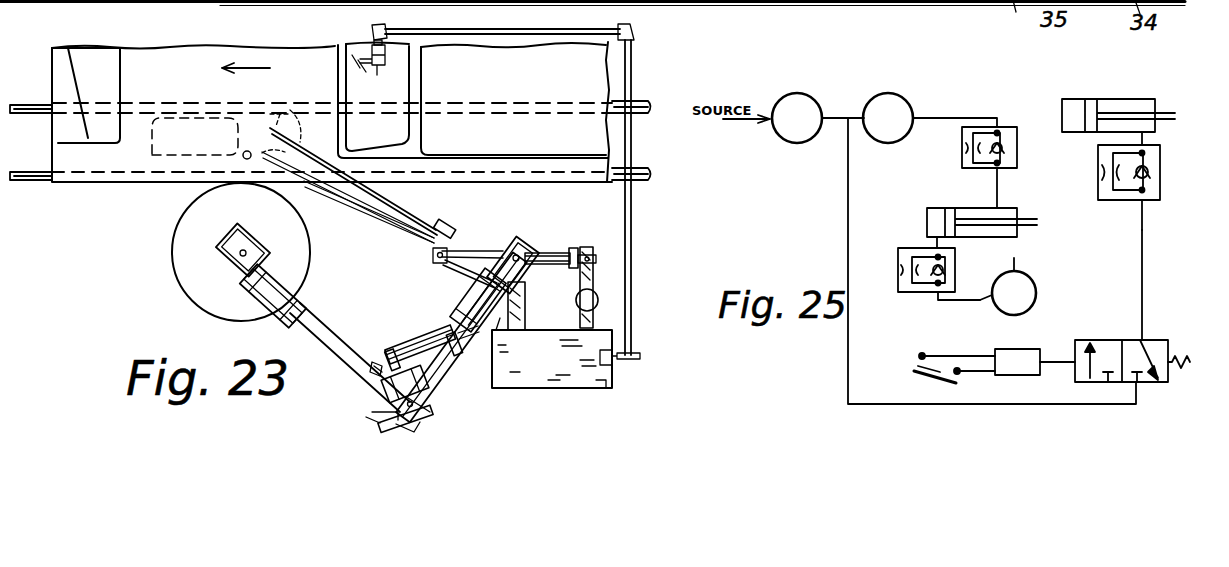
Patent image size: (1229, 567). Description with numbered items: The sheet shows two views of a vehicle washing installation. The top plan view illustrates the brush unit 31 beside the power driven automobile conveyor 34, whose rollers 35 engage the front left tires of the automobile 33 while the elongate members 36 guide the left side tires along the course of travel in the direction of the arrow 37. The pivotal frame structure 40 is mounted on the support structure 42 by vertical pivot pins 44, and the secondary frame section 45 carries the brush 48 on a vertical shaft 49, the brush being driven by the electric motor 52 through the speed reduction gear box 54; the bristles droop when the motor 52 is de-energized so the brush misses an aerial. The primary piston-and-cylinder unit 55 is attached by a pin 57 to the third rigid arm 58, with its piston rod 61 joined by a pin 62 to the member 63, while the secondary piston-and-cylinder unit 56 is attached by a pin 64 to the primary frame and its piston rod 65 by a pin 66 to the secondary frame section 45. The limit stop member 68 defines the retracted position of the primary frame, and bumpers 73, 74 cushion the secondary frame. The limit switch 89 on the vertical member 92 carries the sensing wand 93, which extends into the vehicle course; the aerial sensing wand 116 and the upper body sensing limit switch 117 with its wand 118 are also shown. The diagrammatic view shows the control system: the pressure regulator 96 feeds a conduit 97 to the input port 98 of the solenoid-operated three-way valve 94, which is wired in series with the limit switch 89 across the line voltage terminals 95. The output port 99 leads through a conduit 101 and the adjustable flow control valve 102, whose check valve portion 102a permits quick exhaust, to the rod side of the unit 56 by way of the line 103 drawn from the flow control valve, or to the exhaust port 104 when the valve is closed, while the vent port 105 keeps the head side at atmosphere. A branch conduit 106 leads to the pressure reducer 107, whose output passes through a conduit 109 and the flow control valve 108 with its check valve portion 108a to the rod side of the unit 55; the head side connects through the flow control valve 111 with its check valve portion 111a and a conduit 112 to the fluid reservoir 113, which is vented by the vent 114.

In FIG. 23, the brush unit 31 is at (157, 313).
In FIG. 23, the automobile 33 is at (332, 112).
In FIG. 23, the automobile conveyor 34 is at (640, 113).
In FIG. 23, the rollers 35 is at (298, 110).
In FIG. 23, the elongate members 36 is at (32, 104).
In FIG. 23, the arrow 37 is at (248, 60).
In FIG. 23, the pivotal frame structure 40 is at (460, 383).
In FIG. 23, the support structure 42 is at (552, 359).
In FIG. 23, the vertical pivot pins 44 is at (510, 250).
In FIG. 23, the secondary frame section 45 is at (332, 342).
In FIG. 23, the brush 48 is at (192, 252).
In FIG. 23, the vertical shaft 49 is at (238, 260).
In FIG. 23, the electric motor 52 is at (282, 312).
In FIG. 23, the speed reduction gear box 54 is at (236, 242).
In FIG. 23, the primary piston-and-cylinder unit 55 is at (560, 250).
In FIG. 25, the primary piston-and-cylinder unit 55 is at (980, 208).
In FIG. 23, the secondary piston-and-cylinder unit 56 is at (414, 342).
In FIG. 25, the secondary piston-and-cylinder unit 56 is at (1126, 100).
In FIG. 23, the pin 57 is at (588, 258).
In FIG. 23, the third rigid arm 58 is at (580, 283).
In FIG. 23, the piston rod 61 is at (482, 250).
In FIG. 23, the pin 62 is at (432, 256).
In FIG. 23, the member 63 is at (456, 272).
In FIG. 23, the pin 64 is at (464, 318).
In FIG. 23, the piston rod 65 is at (386, 352).
In FIG. 23, the pin 66 is at (376, 368).
In FIG. 23, the limit stop member 68 is at (508, 305).
In FIG. 23, the bumper 73 is at (396, 388).
In FIG. 23, the bumper 74 is at (368, 417).
In FIG. 25, the limit switch 89 is at (932, 380).
In FIG. 23, the vertical member 92 is at (513, 335).
In FIG. 23, the sensing wand 93 is at (320, 190).
In FIG. 25, the solenoid-operated three-way valve 94 is at (1126, 340).
In FIG. 25, the line voltage terminals 95 is at (918, 356).
In FIG. 25, the pressure regulator 96 is at (818, 102).
In FIG. 25, the conduit 97 is at (848, 218).
In FIG. 25, the input port 98 is at (1130, 384).
In FIG. 25, the output port 99 is at (1142, 340).
In FIG. 25, the conduit 101 is at (1144, 262).
In FIG. 25, the adjustable flow control valve 102 is at (1108, 200).
In FIG. 25, the check valve portion 102a is at (1100, 176).
In FIG. 25, the line 103 is at (1148, 180).
In FIG. 25, the exhaust port 104 is at (1160, 386).
In FIG. 25, the vent port 105 is at (1072, 99).
In FIG. 25, the branch conduit 106 is at (864, 106).
In FIG. 25, the pressure reducer 107 is at (906, 100).
In FIG. 25, the adjustable flow control valve 108 is at (1018, 148).
In FIG. 25, the check valve portion 108a is at (964, 150).
In FIG. 25, the conduit 109 is at (950, 116).
In FIG. 25, the adjustable flow control valve 111 is at (906, 254).
In FIG. 25, the check valve portion 111a is at (900, 288).
In FIG. 25, the conduit 112 is at (950, 302).
In FIG. 25, the fluid reservoir 113 is at (1004, 313).
In FIG. 25, the vent 114 is at (1016, 262).
In FIG. 23, the wand 116 is at (373, 98).
In FIG. 23, the limit switch 117 is at (372, 36).
In FIG. 23, the wand 118 is at (373, 66).